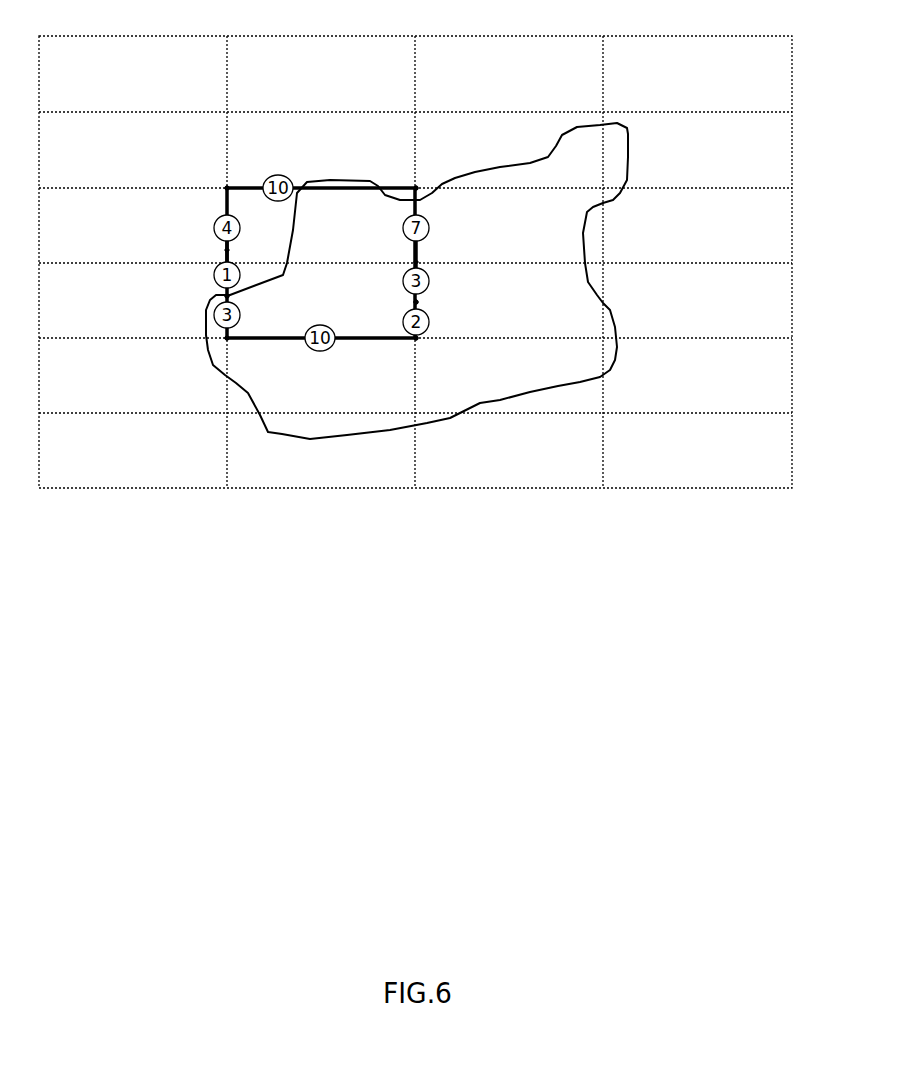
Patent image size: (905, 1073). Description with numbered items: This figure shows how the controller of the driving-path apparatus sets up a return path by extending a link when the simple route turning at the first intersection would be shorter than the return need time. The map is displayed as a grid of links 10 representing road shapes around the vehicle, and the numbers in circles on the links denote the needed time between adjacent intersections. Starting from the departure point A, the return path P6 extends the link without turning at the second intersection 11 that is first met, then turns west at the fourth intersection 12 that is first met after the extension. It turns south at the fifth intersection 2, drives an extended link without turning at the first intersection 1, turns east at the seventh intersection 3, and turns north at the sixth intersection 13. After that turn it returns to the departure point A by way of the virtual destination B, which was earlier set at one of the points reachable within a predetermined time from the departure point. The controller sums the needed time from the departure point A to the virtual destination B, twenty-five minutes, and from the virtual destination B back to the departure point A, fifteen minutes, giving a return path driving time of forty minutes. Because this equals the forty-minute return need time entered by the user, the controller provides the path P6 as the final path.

The link 10 is at (793, 298).
The return path P6 is at (246, 186).
The first intersection 1 is at (224, 250).
The fifth intersection 2 is at (226, 187).
The seventh intersection 3 is at (225, 340).
The second intersection 11 is at (419, 262).
The fourth intersection 12 is at (417, 187).
The sixth intersection 13 is at (418, 340).
The departure point A is at (430, 303).
The virtual destination B is at (242, 300).